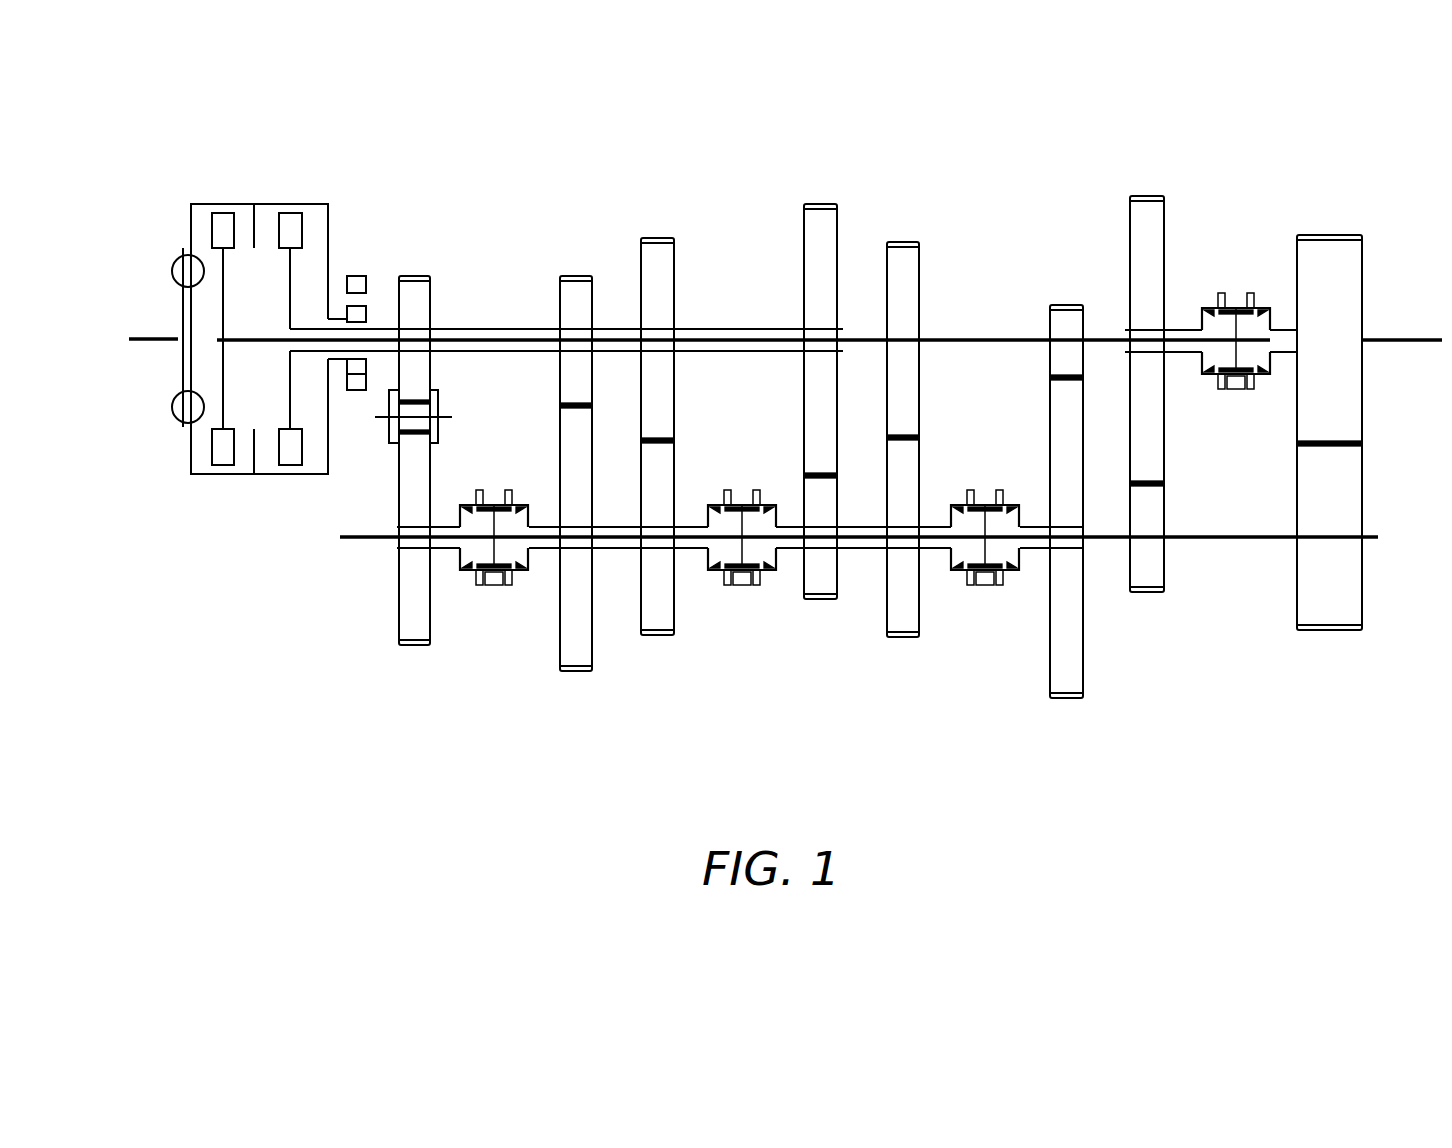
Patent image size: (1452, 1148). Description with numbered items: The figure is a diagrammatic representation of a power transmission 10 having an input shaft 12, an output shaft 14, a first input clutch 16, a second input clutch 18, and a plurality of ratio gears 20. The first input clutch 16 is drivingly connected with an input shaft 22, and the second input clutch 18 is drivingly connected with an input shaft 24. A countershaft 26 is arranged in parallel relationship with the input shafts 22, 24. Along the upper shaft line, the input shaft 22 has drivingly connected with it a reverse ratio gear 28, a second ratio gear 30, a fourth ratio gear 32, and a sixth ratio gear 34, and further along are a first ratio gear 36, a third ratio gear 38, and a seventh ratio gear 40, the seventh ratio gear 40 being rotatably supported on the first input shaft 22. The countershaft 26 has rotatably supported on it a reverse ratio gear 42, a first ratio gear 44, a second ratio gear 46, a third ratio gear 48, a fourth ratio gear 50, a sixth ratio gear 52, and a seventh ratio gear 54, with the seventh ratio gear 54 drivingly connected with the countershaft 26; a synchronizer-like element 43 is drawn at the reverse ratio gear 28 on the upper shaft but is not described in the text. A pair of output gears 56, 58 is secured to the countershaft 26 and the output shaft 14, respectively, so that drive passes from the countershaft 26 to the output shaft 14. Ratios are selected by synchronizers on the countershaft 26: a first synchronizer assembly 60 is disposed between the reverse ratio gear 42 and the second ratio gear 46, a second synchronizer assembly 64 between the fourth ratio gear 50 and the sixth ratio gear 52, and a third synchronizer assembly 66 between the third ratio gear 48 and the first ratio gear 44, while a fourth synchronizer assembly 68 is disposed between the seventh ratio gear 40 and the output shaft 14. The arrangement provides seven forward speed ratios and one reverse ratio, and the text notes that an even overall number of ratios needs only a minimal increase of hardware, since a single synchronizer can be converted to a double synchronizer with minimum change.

The power transmission 10 is at (570, 193).
The input shaft 12 is at (153, 338).
The output shaft 14 is at (1395, 339).
The first input clutch 16 is at (223, 205).
The second input clutch 18 is at (293, 205).
The ratio gears 20 is at (613, 683).
The input shaft 22 is at (701, 337).
The input shaft 24 is at (448, 326).
The countershaft 26 is at (347, 538).
The reverse ratio gear 28 is at (418, 275).
The second ratio gear 30 is at (577, 274).
The fourth ratio gear 32 is at (657, 237).
The sixth ratio gear 34 is at (838, 213).
The first ratio gear 36 is at (1085, 318).
The third ratio gear 38 is at (921, 252).
The seventh ratio gear 40 is at (1166, 200).
The reverse ratio gear 42 is at (432, 627).
The synchronizer 43 is at (440, 390).
The first ratio gear 44 is at (1084, 676).
The second ratio gear 46 is at (557, 648).
The third ratio gear 48 is at (919, 629).
The fourth ratio gear 50 is at (673, 621).
The sixth ratio gear 52 is at (803, 578).
The seventh ratio gear 54 is at (1165, 573).
The output gear 56 is at (1363, 597).
The output gear 58 is at (1364, 411).
The first synchronizer assembly 60 is at (495, 490).
The second synchronizer assembly 64 is at (743, 490).
The third synchronizer assembly 66 is at (986, 490).
The fourth synchronizer assembly 68 is at (1236, 291).